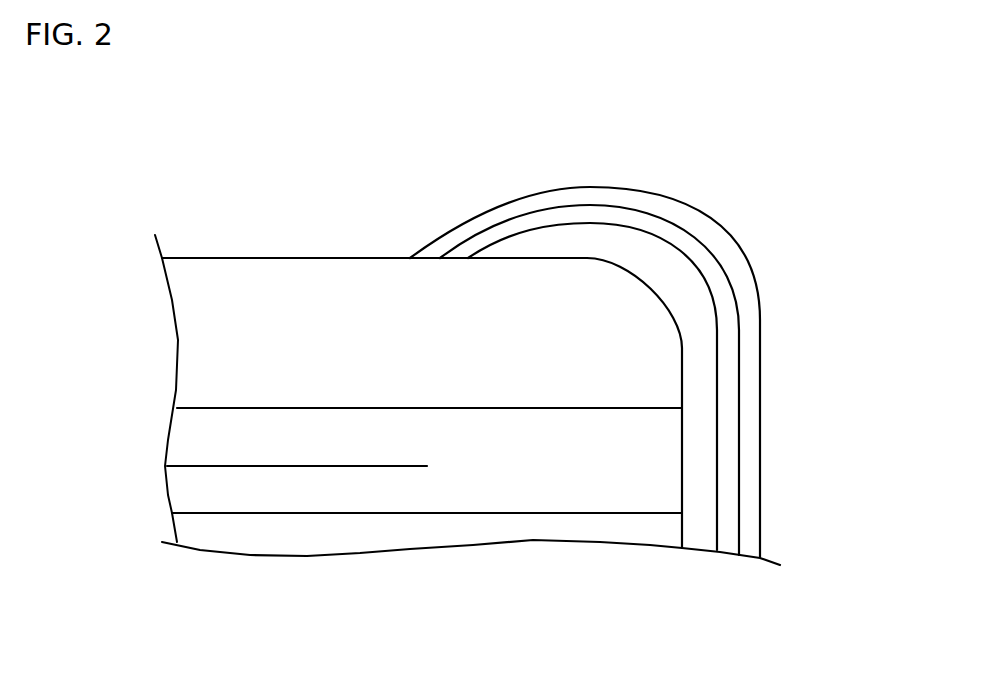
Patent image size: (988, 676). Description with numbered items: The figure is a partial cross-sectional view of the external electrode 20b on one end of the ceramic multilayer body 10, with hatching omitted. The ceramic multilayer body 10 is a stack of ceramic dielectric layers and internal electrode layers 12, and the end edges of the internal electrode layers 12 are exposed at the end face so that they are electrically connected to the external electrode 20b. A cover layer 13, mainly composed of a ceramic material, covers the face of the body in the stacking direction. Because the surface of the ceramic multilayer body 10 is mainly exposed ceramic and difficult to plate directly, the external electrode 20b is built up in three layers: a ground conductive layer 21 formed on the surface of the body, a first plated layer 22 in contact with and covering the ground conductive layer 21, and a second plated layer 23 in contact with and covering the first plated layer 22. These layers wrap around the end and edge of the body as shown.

The ceramic multilayer body 10 is at (188, 192).
The internal electrode layers 12 is at (260, 468).
The cover layer 13 is at (290, 292).
The external electrode 20b is at (852, 307).
The ground conductive layer 21 is at (707, 400).
The first plated layer 22 is at (732, 365).
The second plated layer 23 is at (748, 325).